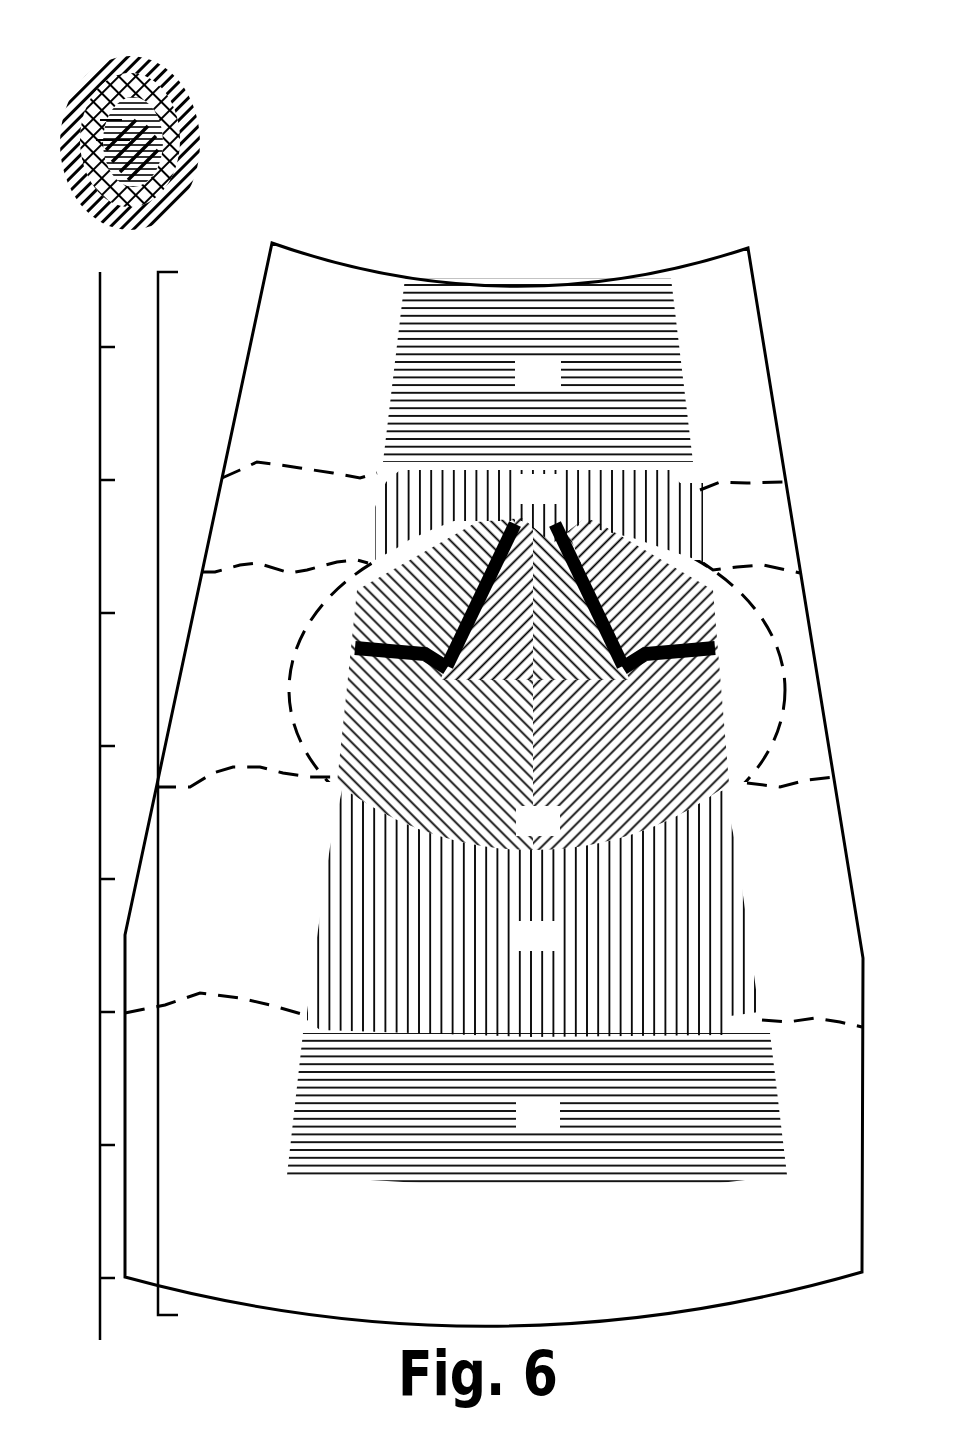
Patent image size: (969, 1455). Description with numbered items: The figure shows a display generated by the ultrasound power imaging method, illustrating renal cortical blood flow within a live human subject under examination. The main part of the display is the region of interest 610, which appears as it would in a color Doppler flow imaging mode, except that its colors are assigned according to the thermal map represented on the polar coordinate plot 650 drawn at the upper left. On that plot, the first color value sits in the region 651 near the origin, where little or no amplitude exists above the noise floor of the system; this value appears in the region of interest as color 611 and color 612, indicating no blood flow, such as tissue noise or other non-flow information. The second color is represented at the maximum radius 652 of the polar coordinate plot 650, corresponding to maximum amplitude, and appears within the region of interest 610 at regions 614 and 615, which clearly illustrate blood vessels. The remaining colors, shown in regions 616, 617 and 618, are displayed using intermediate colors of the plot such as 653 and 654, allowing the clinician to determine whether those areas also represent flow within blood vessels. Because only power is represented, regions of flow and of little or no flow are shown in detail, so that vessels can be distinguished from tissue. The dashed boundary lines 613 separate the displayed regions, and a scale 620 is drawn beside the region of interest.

The region of interest 610 is at (517, 1185).
The color 611 is at (518, 1125).
The color 612 is at (518, 385).
The dashed boundary lines 613 is at (300, 730).
The region 614 is at (357, 641).
The region 615 is at (720, 643).
The region 616 is at (518, 500).
The region 617 is at (550, 700).
The region 618 is at (518, 948).
The length scale 620 is at (200, 1302).
The polar coordinate plot 650 is at (134, 122).
The region near the origin 651 is at (122, 118).
The maximum radius 652 is at (183, 187).
The intermediate color 653 is at (90, 185).
The intermediate color 654 is at (165, 85).